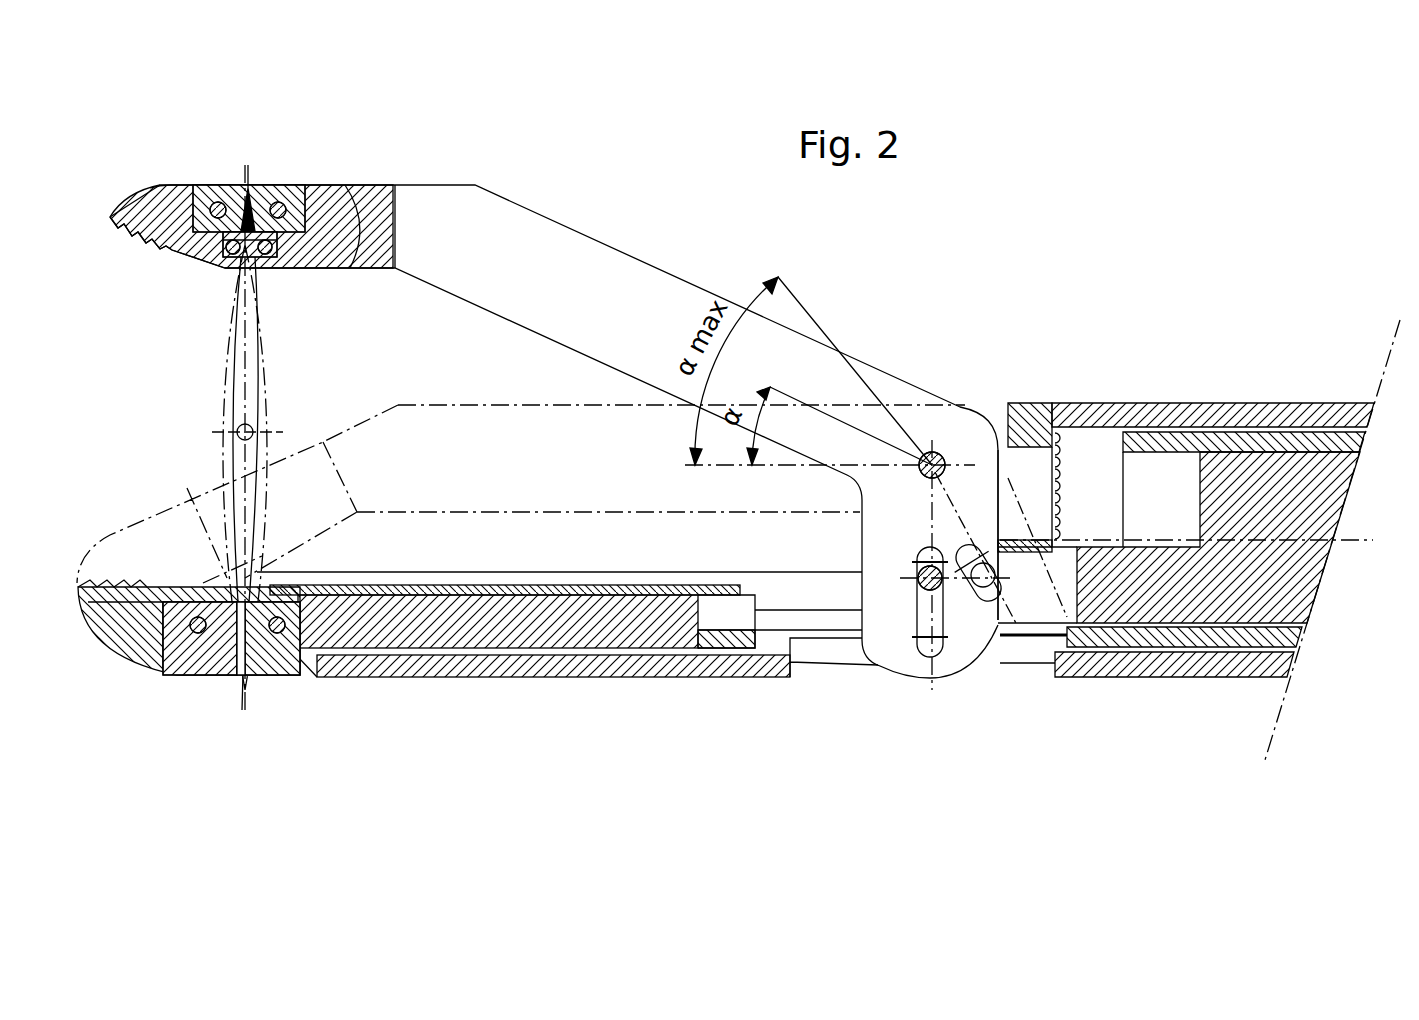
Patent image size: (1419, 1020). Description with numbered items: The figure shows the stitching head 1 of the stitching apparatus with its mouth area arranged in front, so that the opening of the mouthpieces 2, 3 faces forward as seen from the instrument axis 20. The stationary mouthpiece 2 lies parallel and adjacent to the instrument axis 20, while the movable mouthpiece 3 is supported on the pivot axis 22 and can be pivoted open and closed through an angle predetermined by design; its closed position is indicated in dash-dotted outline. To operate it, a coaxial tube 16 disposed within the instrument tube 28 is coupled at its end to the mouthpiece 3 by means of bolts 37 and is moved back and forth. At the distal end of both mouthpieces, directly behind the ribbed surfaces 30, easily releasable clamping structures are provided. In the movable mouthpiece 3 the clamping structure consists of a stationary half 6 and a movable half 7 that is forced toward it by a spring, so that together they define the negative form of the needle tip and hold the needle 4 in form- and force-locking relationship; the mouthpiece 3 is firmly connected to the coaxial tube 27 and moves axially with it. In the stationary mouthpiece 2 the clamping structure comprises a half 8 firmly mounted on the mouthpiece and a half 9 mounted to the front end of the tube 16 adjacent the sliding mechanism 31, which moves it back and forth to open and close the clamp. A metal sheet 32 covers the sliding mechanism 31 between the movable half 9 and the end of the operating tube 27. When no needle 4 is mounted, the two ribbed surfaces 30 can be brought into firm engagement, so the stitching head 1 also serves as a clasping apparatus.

The stitching head 1 is at (86, 370).
The stationary mouthpiece 2 is at (414, 679).
The movable mouthpiece 3 is at (575, 300).
The needle 4 is at (228, 376).
The stationary half of clamping structure 6 is at (232, 195).
The movable half of clamping structure 7 is at (272, 195).
The stationary half of clamping structure 8 is at (180, 668).
The movable half of clamping structure 9 is at (287, 660).
The coaxial tube 16 is at (1272, 635).
The instrument axis 20 is at (1350, 540).
The pivot axis 22 is at (940, 452).
The coaxial tube 27 is at (1155, 597).
The instrument tube 28 is at (1118, 665).
The ribbed surfaces 30 is at (142, 212).
The sliding mechanism 31 is at (650, 625).
The metal sheet 32 is at (513, 597).
The bolts 37 is at (922, 592).